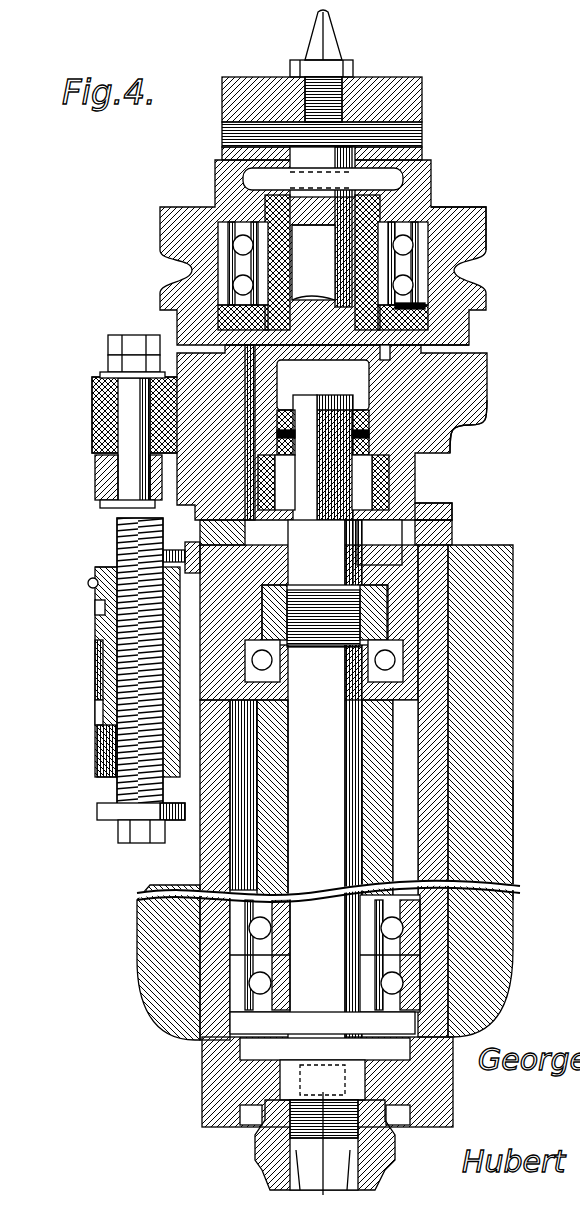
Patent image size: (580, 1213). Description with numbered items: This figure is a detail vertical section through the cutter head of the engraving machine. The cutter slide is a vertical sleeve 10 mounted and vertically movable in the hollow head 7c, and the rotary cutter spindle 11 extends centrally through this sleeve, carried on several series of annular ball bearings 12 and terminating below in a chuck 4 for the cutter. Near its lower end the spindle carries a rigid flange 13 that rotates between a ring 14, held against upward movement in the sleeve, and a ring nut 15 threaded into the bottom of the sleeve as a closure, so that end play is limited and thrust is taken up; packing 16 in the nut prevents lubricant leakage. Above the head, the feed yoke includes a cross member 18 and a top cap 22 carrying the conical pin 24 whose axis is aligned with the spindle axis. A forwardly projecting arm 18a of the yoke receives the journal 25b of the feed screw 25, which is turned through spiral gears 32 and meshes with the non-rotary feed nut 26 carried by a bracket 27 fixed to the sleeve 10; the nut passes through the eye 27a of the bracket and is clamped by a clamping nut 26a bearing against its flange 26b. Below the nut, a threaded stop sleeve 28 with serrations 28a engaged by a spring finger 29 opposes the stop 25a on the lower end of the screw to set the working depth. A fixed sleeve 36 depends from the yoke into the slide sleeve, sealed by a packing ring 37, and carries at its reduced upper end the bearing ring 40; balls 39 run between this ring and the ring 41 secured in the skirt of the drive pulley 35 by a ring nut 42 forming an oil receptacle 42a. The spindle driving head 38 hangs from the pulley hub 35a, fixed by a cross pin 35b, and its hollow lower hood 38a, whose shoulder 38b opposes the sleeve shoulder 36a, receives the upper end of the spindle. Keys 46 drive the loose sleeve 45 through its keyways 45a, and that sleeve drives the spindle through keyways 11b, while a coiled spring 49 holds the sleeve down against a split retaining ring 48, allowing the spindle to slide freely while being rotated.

The chuck 4 is at (268, 1152).
The vertical hollow boss, housing or head 7c is at (500, 828).
The vertical sleeve 10 is at (440, 780).
The rotary cutter spindle 11 is at (324, 810).
The keyways 11b is at (324, 410).
The annular ball bearings 12 is at (375, 664).
The annular flange or disk 13 is at (265, 1050).
The ring 14 is at (322, 1023).
The ring nut 15 is at (250, 1078).
The packing 16 is at (245, 1096).
The cross member 18 is at (480, 390).
The forwardly projecting arm 18a is at (92, 402).
The top rigid cross member or cap 22 is at (405, 80).
The fixed vertical pin 24 is at (332, 42).
The rotary vertical feed screw 25 is at (117, 530).
The stop 25a is at (100, 810).
The journal portion 25b is at (118, 434).
The feed nut 26 is at (100, 632).
The clamping nut 26a is at (95, 568).
The annular flange or shoulder 26b is at (95, 612).
The bracket 27 is at (188, 542).
The ring or eye 27a is at (88, 584).
The screw threaded sleeve 28 is at (97, 770).
The depressions or serrations 28a is at (97, 738).
The spring finger 29 is at (95, 678).
The spiral gears 32 is at (95, 474).
The drive pulley 35 is at (487, 230).
The hub 35a is at (420, 140).
The cross pin 35b is at (403, 178).
The fixed sleeve 36 is at (463, 534).
The interior annular downwardly facing shoulder 36a is at (430, 347).
The packing ring 37 is at (452, 512).
The spindle driving head 38 is at (313, 262).
The hollow coupling head or hood 38a is at (400, 370).
The exterior annular upwardly facing shoulder 38b is at (298, 300).
The balls 39 is at (195, 270).
The bearing ring 40 is at (215, 205).
The bearing ring 41 is at (200, 232).
The ring nut 42 is at (198, 316).
The oil retaining receptacle 42a is at (440, 298).
The sleeve 45 is at (258, 500).
The exterior keyways 45a is at (458, 460).
The keys 46 is at (268, 484).
The retaining ring 48 is at (379, 542).
The coiled spring 49 is at (455, 428).